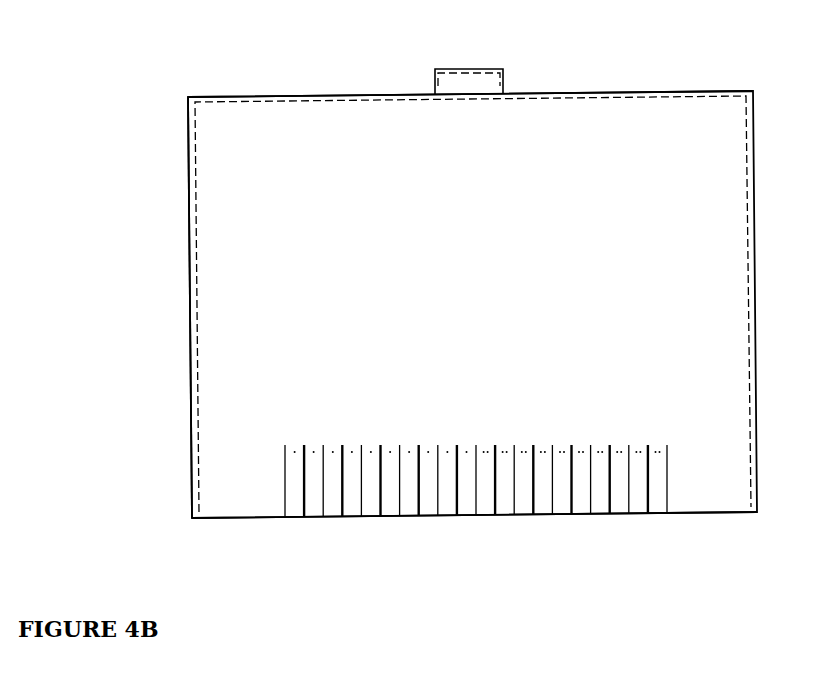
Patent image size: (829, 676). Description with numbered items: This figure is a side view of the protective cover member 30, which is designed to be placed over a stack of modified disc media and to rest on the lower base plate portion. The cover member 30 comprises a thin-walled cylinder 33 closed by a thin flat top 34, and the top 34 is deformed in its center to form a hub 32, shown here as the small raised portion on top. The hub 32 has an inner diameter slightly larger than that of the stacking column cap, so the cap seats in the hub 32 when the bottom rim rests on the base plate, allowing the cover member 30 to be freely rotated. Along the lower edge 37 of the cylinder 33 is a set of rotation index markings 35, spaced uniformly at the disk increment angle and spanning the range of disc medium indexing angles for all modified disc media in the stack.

The cover member 30 is at (712, 50).
The hub 32 is at (425, 71).
The thin-walled cylinder 33 is at (178, 214).
The thin flat top 34 is at (568, 85).
The rotation index markings 35 is at (274, 451).
The lower edge 37 is at (712, 523).